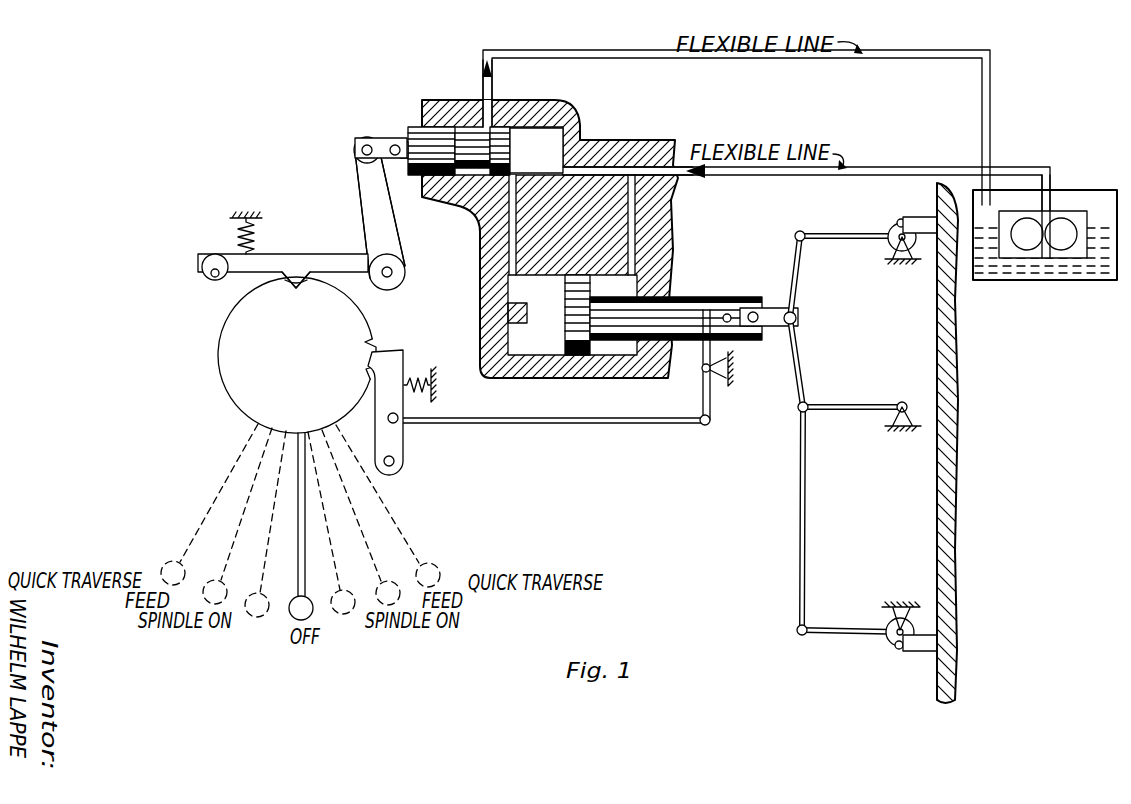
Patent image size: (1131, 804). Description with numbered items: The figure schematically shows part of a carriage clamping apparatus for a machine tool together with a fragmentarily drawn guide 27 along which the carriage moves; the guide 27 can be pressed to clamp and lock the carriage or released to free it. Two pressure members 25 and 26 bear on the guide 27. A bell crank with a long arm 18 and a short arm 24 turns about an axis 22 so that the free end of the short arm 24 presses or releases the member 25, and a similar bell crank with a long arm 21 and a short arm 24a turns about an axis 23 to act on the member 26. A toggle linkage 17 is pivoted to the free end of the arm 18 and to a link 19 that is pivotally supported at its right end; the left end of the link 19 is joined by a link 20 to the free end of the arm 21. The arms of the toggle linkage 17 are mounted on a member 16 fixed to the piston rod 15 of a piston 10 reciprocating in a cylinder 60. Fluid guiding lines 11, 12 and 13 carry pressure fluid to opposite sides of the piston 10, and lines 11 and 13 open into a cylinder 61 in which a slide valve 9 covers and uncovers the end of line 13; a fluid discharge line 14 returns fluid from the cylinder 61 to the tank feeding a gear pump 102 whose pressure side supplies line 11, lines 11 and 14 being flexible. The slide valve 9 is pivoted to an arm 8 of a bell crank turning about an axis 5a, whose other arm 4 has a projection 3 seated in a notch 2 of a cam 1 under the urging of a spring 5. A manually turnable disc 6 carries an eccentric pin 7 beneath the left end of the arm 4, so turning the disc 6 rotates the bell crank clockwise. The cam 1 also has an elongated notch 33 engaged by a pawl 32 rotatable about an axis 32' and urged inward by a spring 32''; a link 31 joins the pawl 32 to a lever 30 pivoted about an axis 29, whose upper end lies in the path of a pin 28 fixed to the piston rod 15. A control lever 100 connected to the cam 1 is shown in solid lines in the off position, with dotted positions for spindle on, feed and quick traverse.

The cam 1 is at (250, 382).
The notch 2 is at (284, 283).
The projection 3 is at (310, 281).
The arm 4 is at (318, 263).
The spring 5 is at (256, 228).
The axis 5a is at (392, 272).
The manually turnable disc 6 is at (214, 266).
The pin 7 is at (212, 275).
The arm 8 is at (380, 231).
The slide valve 9 is at (500, 155).
The piston 10 is at (567, 357).
The fluid guiding line 11 is at (668, 172).
The fluid guiding line 12 is at (631, 224).
The fluid guiding line 13 is at (510, 218).
The fluid discharge line 14 is at (487, 118).
The piston rod 15 is at (642, 317).
The member 16 is at (777, 316).
The toggle linkage 17 is at (797, 348).
The long arm 18 is at (837, 234).
The link 19 is at (860, 410).
The link 20 is at (800, 540).
The long arm 21 is at (843, 634).
The axis 22 is at (899, 250).
The axis 23 is at (898, 608).
The short arm 24 is at (897, 230).
The short arm 24a is at (897, 642).
The pressure member 25 is at (928, 222).
The pressure member 26 is at (918, 649).
The guide 27 is at (947, 520).
The pin 28 is at (729, 322).
The axis 29 is at (704, 370).
The lever 30 is at (711, 402).
The link 31 is at (600, 424).
The pawl 32 is at (418, 413).
The axis 32' is at (409, 477).
The spring 32'' is at (440, 376).
The elongated notch 33 is at (371, 344).
The cylinder 60 is at (528, 342).
The cylinder 61 is at (552, 145).
The lever 100 is at (297, 565).
The gear pump 102 is at (1068, 216).